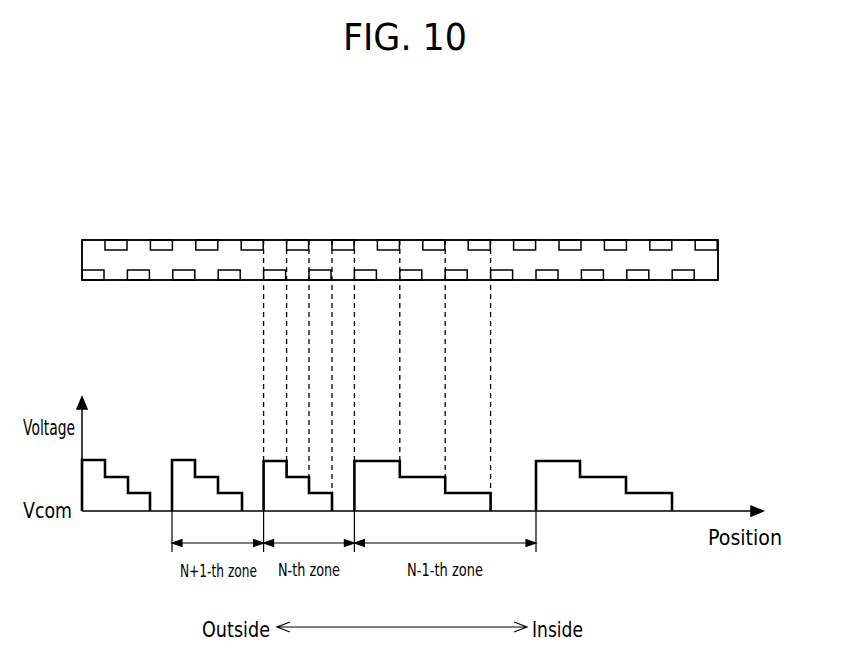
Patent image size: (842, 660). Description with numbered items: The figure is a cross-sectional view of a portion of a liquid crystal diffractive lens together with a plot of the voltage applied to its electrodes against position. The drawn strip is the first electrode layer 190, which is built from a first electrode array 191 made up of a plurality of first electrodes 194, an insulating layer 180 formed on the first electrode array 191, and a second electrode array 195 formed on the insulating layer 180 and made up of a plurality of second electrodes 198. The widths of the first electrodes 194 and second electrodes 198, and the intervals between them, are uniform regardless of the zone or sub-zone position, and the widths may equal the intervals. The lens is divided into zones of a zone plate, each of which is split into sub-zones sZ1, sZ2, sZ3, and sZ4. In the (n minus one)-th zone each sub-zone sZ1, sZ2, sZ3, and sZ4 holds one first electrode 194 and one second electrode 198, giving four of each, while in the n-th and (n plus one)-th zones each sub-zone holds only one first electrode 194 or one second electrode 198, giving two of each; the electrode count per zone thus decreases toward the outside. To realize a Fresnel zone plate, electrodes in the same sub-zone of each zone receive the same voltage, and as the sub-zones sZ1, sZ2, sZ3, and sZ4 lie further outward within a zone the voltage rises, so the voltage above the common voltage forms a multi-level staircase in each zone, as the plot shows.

The first electrode layer 190 is at (77, 240).
The insulating layer 180 is at (182, 255).
The second electrode 198 is at (117, 243).
The first electrode 194 is at (91, 280).
The second electrode array 195 is at (721, 244).
The first electrode array 191 is at (721, 272).
The sub-zone sZ1 is at (273, 240).
The sub-zone sZ2 is at (293, 240).
The sub-zone sZ3 is at (318, 240).
The sub-zone sZ4 is at (343, 240).